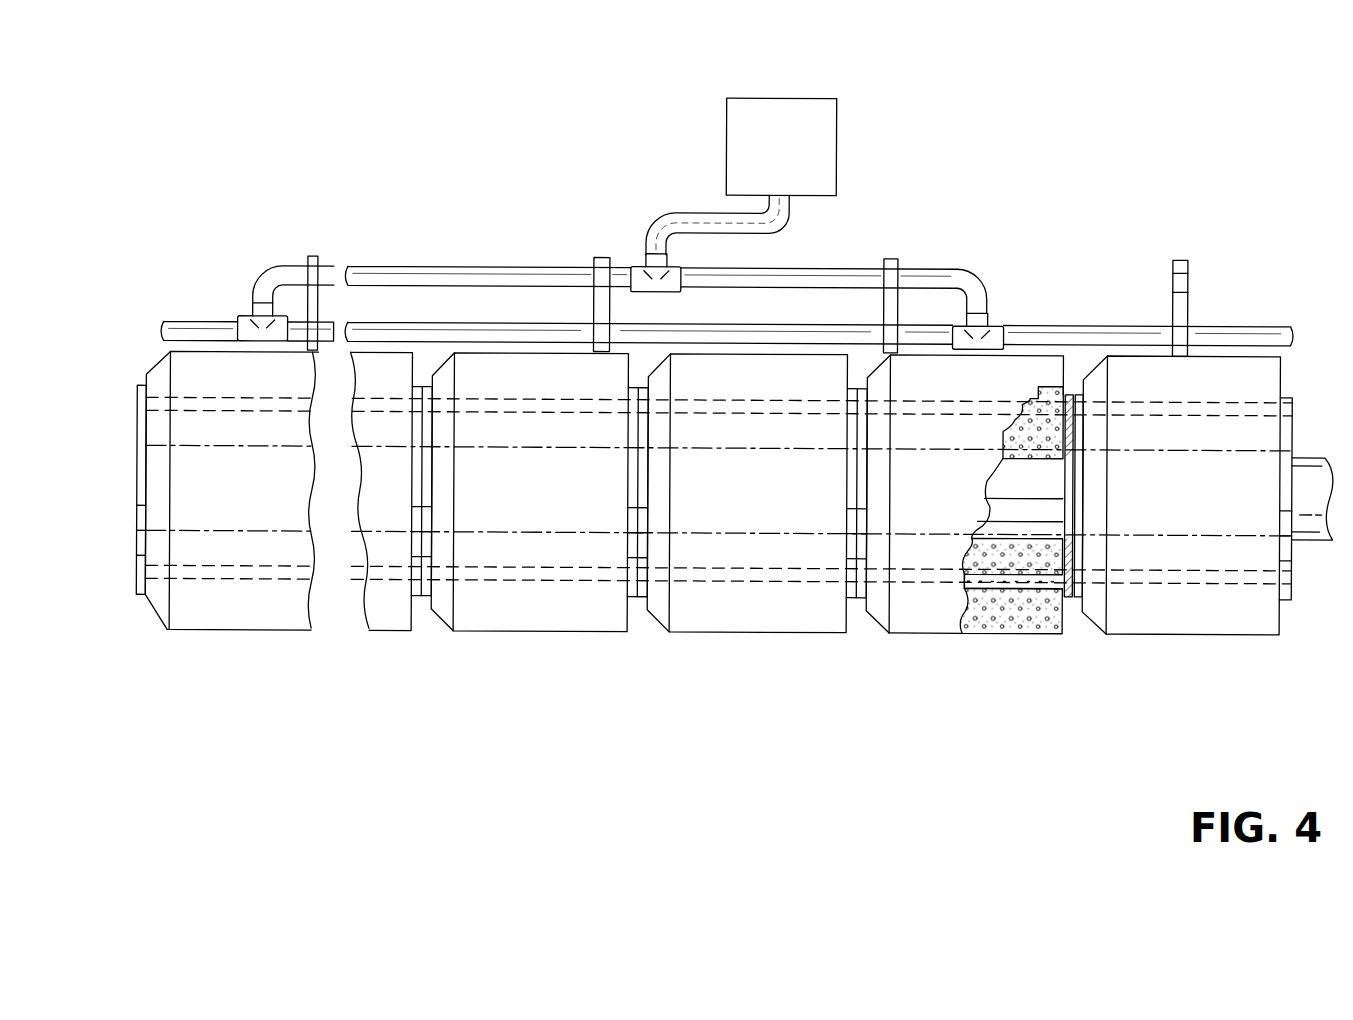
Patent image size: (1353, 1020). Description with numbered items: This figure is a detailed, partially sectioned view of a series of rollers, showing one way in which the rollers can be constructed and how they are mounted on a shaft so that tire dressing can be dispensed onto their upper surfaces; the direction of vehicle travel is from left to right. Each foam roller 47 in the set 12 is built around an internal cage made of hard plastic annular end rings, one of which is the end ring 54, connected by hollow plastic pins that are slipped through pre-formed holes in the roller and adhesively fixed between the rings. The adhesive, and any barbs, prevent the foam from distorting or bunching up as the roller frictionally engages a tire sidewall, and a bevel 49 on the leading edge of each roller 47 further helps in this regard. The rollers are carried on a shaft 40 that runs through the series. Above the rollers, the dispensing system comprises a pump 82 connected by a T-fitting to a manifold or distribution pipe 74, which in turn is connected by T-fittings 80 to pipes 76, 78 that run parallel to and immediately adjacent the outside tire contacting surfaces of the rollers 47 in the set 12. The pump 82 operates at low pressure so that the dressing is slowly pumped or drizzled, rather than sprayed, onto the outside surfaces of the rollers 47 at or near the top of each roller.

The set of rollers 12 is at (485, 634).
The pipe 40 is at (1296, 452).
The foam roller 47 is at (282, 618).
The bevel 49 is at (150, 615).
The annular end ring 54 is at (1070, 605).
The manifold or distribution pipe 74 is at (427, 267).
The pipe 76 is at (178, 322).
The pipe 78 is at (1232, 326).
The T-fitting 80 is at (250, 318).
The pump 82 is at (835, 132).